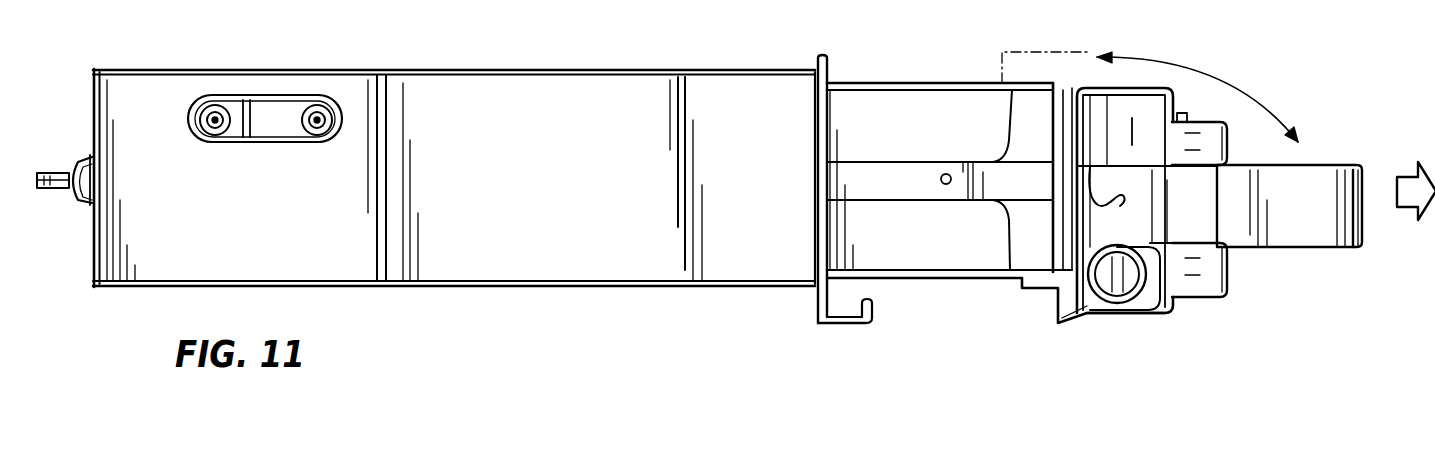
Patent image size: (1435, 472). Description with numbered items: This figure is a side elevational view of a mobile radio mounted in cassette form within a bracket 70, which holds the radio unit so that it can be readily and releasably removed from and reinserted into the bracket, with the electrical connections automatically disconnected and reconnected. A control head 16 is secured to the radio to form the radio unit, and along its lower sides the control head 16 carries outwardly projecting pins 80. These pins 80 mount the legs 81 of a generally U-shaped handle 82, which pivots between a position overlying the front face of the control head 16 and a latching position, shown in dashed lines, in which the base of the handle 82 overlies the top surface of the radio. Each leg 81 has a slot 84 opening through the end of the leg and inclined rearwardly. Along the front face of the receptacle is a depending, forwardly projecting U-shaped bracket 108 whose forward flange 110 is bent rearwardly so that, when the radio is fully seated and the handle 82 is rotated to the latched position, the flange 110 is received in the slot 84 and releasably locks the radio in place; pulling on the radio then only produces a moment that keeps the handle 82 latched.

The control head 16 is at (1175, 308).
The bracket 70 is at (573, 284).
The pin 80 is at (1110, 295).
The leg 81 is at (1207, 213).
The U-shaped handle 82 is at (1338, 248).
The slot 84 is at (1090, 167).
The U-shaped bracket 108 is at (845, 324).
The forward flange 110 is at (874, 302).